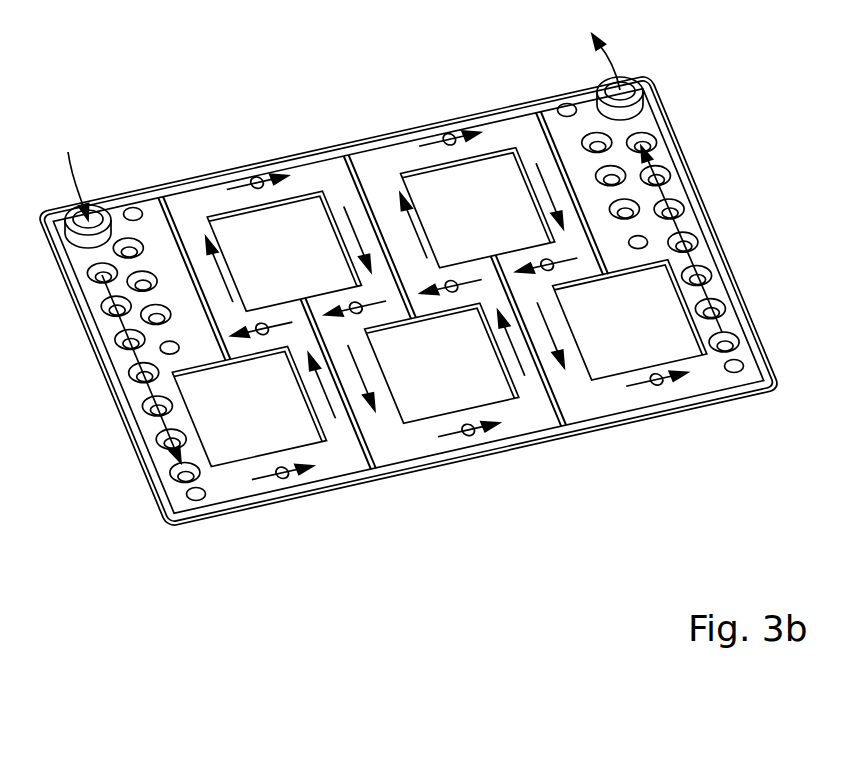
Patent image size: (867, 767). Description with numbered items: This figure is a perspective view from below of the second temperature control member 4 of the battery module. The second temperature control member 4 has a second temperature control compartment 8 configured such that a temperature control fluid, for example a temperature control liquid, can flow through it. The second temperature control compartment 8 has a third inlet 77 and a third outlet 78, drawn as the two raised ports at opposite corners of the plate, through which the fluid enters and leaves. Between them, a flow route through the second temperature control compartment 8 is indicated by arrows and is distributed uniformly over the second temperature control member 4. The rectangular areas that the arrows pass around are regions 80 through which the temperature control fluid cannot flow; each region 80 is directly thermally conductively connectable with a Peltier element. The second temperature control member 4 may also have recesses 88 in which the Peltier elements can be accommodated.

The second temperature control member 4 is at (162, 541).
The second temperature control compartment 8 is at (122, 337).
The third inlet 77 is at (78, 207).
The third outlet 78 is at (607, 80).
The region 80 is at (443, 383).
The recess 88 is at (262, 422).